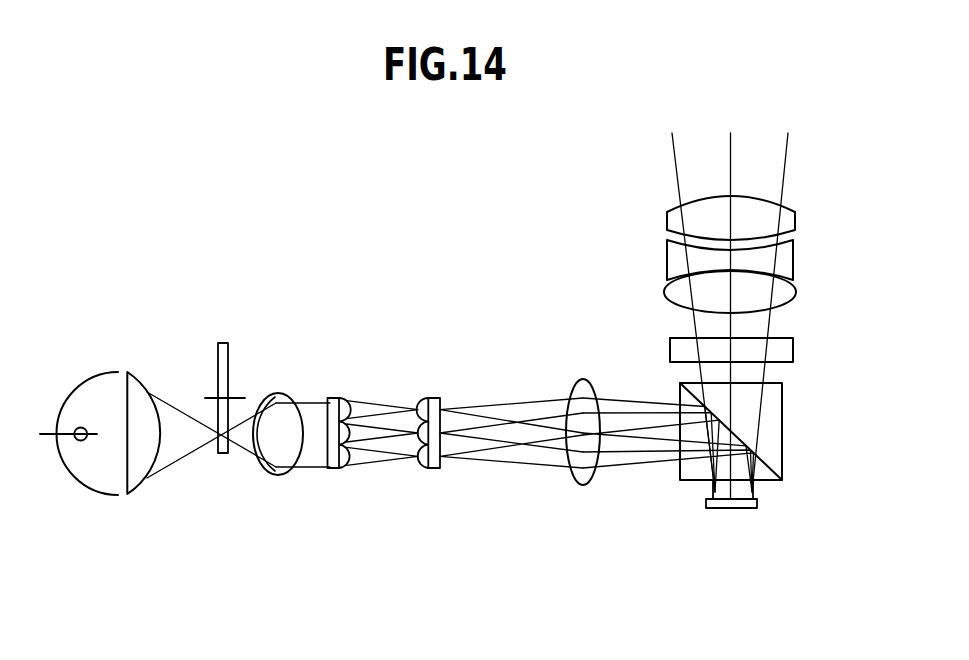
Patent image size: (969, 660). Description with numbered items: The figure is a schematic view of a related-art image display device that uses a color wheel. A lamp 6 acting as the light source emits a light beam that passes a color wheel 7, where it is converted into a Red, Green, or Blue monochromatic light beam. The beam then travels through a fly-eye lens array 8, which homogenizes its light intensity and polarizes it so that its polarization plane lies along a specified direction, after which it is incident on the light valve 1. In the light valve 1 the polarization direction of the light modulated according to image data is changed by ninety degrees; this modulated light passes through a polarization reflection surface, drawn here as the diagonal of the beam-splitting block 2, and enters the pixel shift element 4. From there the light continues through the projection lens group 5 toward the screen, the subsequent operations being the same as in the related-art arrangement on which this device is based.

The light valve 1 is at (732, 508).
The polarizing beam splitter prism 2 is at (782, 423).
The pixel shift element 4 is at (793, 348).
The projection lens 5 is at (813, 200).
The lamp 6 is at (95, 494).
The color wheel 7 is at (223, 455).
The fly-eye lens array 8 is at (440, 482).